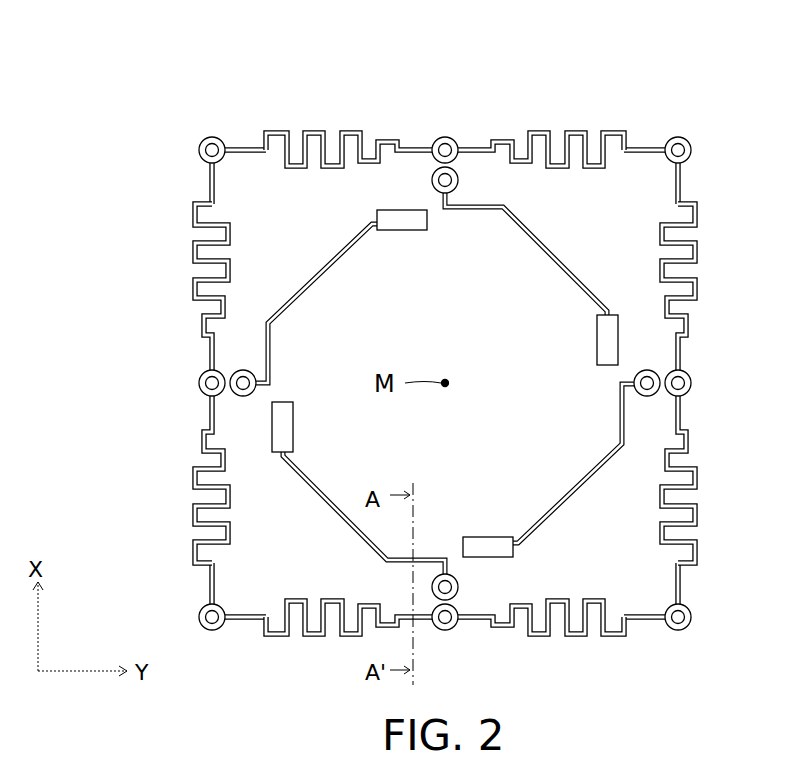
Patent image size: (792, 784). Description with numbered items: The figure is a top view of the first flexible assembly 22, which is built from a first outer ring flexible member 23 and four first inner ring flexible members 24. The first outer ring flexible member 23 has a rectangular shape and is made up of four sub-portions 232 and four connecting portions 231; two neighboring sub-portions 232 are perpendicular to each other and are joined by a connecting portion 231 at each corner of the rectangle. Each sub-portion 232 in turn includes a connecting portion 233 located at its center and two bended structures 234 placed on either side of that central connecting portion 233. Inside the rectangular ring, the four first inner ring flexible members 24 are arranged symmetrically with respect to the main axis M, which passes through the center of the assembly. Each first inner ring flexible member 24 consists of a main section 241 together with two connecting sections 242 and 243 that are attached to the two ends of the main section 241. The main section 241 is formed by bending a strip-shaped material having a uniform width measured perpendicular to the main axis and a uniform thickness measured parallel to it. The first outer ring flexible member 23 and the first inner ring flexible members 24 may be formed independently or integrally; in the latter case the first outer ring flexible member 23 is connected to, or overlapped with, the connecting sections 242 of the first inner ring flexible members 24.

The first flexible assembly 22 is at (444, 330).
The first outer ring flexible member 23 is at (444, 352).
The connecting portion 231 is at (199, 150).
The sub-portion 232 is at (630, 148).
The connecting portion 233 is at (445, 137).
The bended structure 234 is at (312, 132).
The first inner ring flexible member 24 is at (506, 335).
The main section 241 is at (545, 241).
The connecting section 242 is at (456, 172).
The connecting section 243 is at (608, 350).